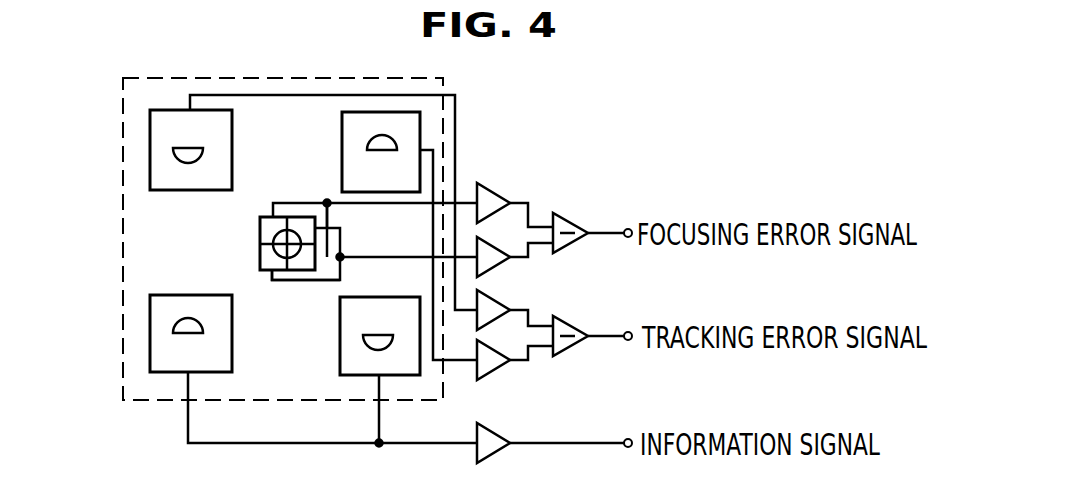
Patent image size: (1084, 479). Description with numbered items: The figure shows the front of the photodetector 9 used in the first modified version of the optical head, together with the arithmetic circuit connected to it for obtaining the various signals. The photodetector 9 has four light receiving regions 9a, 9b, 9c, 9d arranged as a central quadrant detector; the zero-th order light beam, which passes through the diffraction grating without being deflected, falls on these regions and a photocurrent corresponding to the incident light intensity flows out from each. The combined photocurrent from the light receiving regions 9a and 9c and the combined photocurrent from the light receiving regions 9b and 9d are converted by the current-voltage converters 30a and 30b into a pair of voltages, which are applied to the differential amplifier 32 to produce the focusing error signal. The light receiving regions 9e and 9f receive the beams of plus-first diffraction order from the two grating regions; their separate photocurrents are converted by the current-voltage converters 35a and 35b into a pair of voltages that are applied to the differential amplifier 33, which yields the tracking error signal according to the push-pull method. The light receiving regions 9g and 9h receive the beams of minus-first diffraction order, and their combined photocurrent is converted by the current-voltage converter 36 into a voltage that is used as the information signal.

The photodetector 9 is at (122, 98).
The light receiving region 9a is at (260, 231).
The light receiving region 9b is at (297, 203).
The light receiving region 9c is at (293, 280).
The light receiving region 9d is at (260, 262).
The light receiving region 9e is at (150, 150).
The light receiving region 9f is at (342, 122).
The light receiving region 9g is at (340, 360).
The light receiving region 9h is at (150, 345).
The current-voltage converter 30a is at (497, 185).
The current-voltage converter 30b is at (495, 240).
The differential amplifier 32 is at (571, 222).
The differential amplifier 33 is at (570, 325).
The current-voltage converter 35a is at (490, 300).
The current-voltage converter 35b is at (494, 370).
The current-voltage converter 36 is at (500, 430).